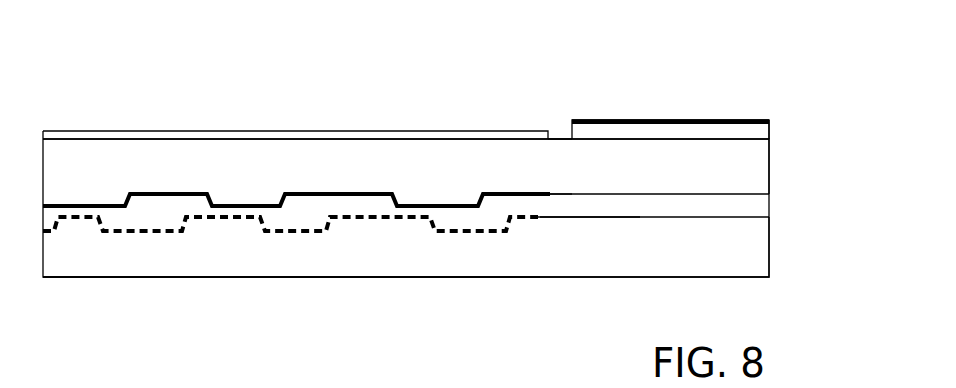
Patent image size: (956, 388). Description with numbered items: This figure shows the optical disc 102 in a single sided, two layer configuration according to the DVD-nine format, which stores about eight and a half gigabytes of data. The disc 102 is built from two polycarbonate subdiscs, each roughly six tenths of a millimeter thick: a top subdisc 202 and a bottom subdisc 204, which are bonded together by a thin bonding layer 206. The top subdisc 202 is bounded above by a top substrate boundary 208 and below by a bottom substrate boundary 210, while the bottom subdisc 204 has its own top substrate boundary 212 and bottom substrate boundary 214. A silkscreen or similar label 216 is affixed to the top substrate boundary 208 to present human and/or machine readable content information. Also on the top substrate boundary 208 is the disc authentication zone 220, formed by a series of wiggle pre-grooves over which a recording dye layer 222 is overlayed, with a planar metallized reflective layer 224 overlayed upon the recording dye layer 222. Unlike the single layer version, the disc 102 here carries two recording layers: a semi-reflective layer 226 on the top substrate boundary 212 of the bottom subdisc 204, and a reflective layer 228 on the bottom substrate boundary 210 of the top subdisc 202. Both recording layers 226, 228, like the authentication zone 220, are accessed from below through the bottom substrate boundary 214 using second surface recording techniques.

The optical disc 102 is at (165, 60).
The top subdisc 202 is at (742, 170).
The bottom subdisc 204 is at (742, 250).
The bonding layer 206 is at (757, 202).
The top substrate boundary 208 is at (555, 138).
The bottom substrate boundary 210 is at (568, 195).
The top substrate boundary 212 is at (628, 217).
The bottom substrate boundary 214 is at (395, 277).
The label 216 is at (397, 130).
The disc authentication zone 220 is at (655, 58).
The recording dye layer 222 is at (607, 120).
The planar metallized reflective layer 224 is at (643, 118).
The semi-reflective layer 226 is at (247, 218).
The reflective layer 228 is at (240, 206).